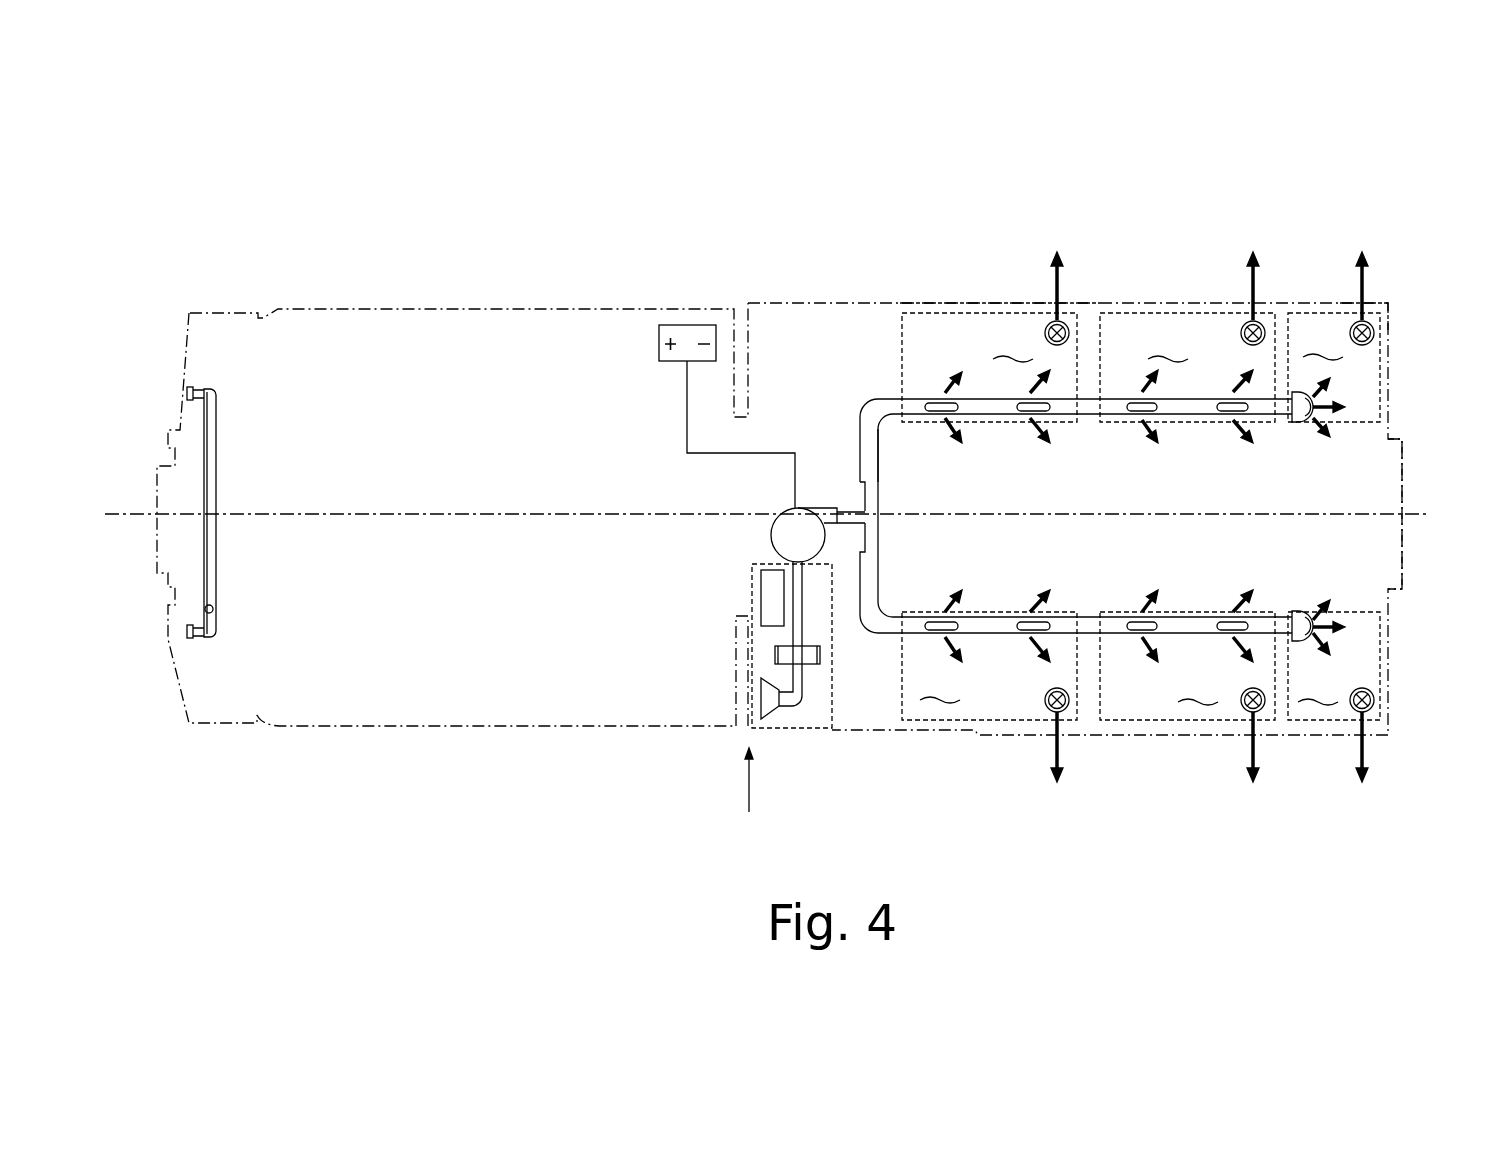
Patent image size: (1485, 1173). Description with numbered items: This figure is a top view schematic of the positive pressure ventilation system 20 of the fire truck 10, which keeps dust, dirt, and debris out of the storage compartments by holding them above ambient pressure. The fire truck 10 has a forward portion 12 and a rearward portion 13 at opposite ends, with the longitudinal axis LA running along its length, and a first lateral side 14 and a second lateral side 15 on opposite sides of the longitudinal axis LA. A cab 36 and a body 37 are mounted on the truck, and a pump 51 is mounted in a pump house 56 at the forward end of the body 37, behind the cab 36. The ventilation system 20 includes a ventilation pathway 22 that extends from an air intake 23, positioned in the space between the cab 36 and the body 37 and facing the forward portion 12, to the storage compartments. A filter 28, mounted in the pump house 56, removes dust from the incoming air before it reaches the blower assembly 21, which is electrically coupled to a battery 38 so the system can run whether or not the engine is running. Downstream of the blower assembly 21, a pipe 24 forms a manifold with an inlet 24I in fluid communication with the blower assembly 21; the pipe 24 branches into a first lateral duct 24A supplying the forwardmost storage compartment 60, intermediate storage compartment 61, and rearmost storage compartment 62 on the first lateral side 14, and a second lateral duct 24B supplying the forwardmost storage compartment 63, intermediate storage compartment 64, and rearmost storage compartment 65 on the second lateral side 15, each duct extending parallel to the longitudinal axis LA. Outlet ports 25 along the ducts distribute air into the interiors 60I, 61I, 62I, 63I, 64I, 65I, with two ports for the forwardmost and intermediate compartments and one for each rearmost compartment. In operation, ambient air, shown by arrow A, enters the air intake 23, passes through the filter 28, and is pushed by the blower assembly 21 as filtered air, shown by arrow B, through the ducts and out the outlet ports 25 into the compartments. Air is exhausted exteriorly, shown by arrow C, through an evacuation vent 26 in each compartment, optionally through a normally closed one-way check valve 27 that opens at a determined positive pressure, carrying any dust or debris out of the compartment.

The fire truck 10 is at (185, 187).
The forward portion 12 is at (145, 487).
The rearward portion 13 is at (1417, 491).
The first lateral side 14 is at (1110, 529).
The second lateral side 15 is at (883, 290).
The positive pressure ventilation system 20 is at (795, 681).
The blower assembly 21 is at (780, 515).
The ventilation pathway 22 is at (843, 448).
The air intake 23 is at (761, 694).
The pipe 24 is at (1088, 468).
The first lateral duct 24A is at (993, 633).
The second lateral duct 24B is at (917, 398).
The inlet 24I is at (850, 510).
The outlet port 25 is at (1133, 403).
The evacuation vent 26 is at (1372, 695).
The one-way check valve 27 is at (1372, 704).
The filter 28 is at (820, 657).
The cab 36 is at (403, 318).
The body 37 is at (1385, 317).
The battery 38 is at (659, 340).
The pump 51 is at (761, 580).
The pump house 56 is at (808, 730).
The forwardmost storage compartment 60 is at (989, 700).
The interior 60I is at (940, 688).
The intermediate storage compartment 61 is at (1187, 716).
The interior 61I is at (1198, 690).
The rearmost storage compartment 62 is at (1365, 727).
The interior 62I is at (1318, 690).
The forwardmost storage compartment 63 is at (989, 324).
The interior 63I is at (1013, 347).
The intermediate storage compartment 64 is at (1187, 326).
The interior 64I is at (1168, 347).
The rearmost storage compartment 65 is at (1334, 310).
The interior 65I is at (1323, 345).
The longitudinal axis LA is at (139, 516).
The ambient air arrow A is at (749, 794).
The filtered air arrow B is at (1145, 507).
The exhaust air arrow C is at (1055, 273).